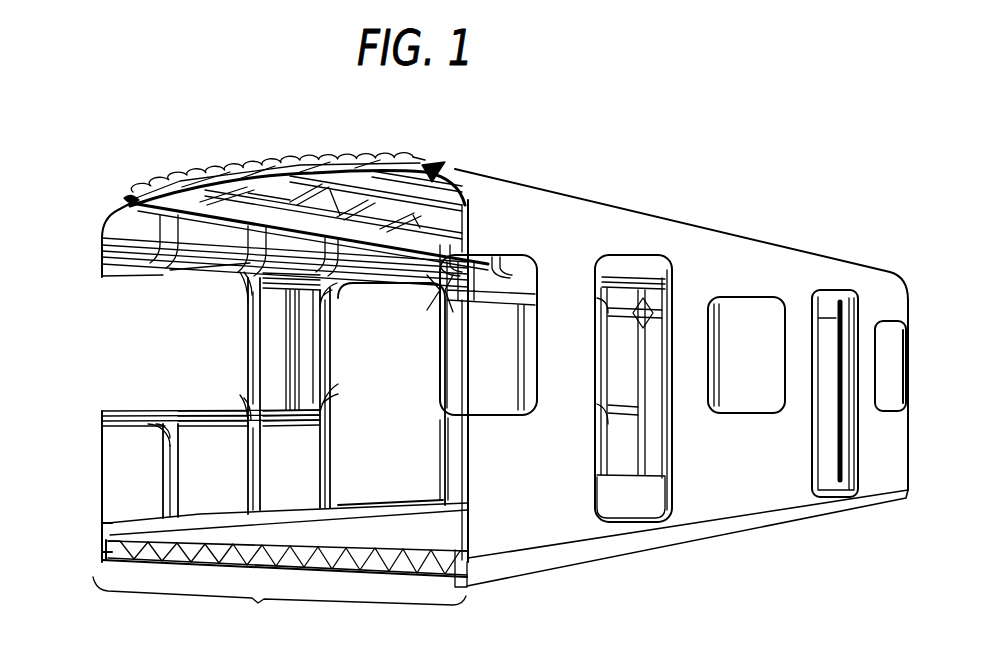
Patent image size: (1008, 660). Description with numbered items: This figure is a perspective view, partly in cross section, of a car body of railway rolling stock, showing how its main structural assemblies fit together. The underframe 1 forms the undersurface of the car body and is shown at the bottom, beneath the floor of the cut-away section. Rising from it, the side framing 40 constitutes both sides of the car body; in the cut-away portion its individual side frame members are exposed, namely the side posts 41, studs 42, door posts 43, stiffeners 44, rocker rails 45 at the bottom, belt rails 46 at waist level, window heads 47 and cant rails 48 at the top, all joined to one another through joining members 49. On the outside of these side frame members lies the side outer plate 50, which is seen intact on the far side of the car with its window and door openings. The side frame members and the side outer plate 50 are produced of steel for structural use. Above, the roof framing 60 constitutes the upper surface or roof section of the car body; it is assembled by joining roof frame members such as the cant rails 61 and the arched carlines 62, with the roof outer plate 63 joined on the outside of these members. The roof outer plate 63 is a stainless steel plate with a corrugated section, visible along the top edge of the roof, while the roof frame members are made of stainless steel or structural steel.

The underframe 1 is at (279, 604).
The side framing 40 is at (104, 214).
The side posts 41 is at (250, 353).
The studs 42 is at (168, 468).
The door posts 43 is at (330, 358).
The stiffeners 44 is at (300, 387).
The rocker rails 45 is at (104, 525).
The belt rails 46 is at (195, 414).
The window heads 47 is at (102, 234).
The cant rails 48 is at (128, 196).
The joining members 49 is at (362, 424).
The side outer plate 50 is at (102, 458).
The roof framing 60 is at (321, 159).
The cant rails 61 is at (137, 191).
The carlines 62 is at (288, 178).
The roof outer plate 63 is at (238, 160).